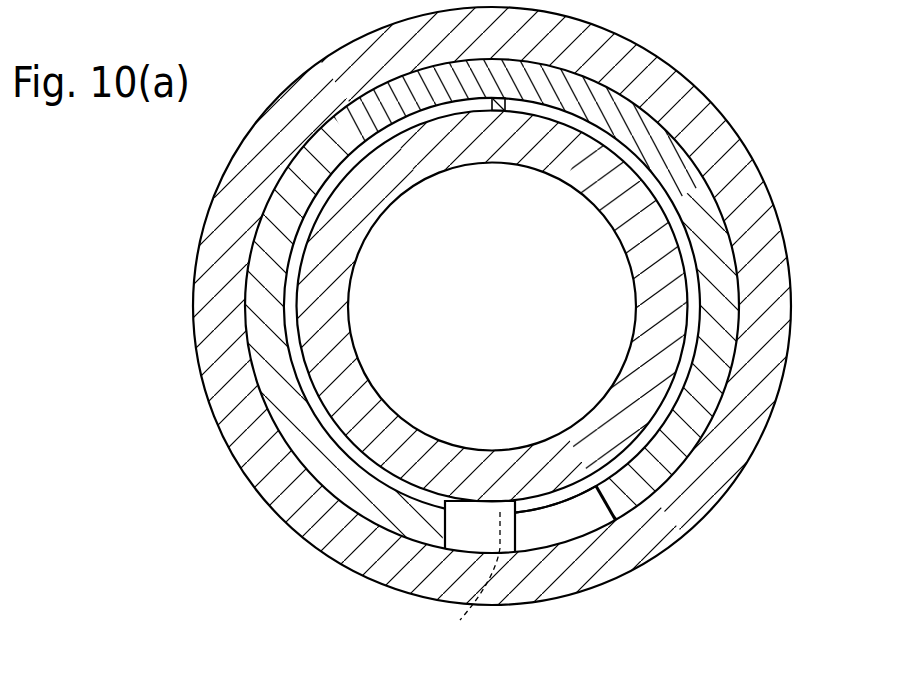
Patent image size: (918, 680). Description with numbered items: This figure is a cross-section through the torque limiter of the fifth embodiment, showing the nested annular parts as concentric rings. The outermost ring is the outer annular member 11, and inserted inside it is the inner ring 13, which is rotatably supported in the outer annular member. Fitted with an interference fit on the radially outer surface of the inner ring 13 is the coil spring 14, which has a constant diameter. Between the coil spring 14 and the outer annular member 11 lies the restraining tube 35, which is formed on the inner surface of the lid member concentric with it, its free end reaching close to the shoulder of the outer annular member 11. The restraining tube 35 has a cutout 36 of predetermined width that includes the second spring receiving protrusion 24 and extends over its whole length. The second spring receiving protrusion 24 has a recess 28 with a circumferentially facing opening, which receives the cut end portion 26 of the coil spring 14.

The outer annular member 11 is at (687, 107).
The restraining tube 35 is at (698, 213).
The coil spring 14 is at (402, 120).
The inner ring 13 is at (653, 352).
The second spring receiving protrusion 24 is at (463, 525).
The recess 28 is at (463, 585).
The cut end portion 26 is at (558, 498).
The cutout 36 is at (598, 512).